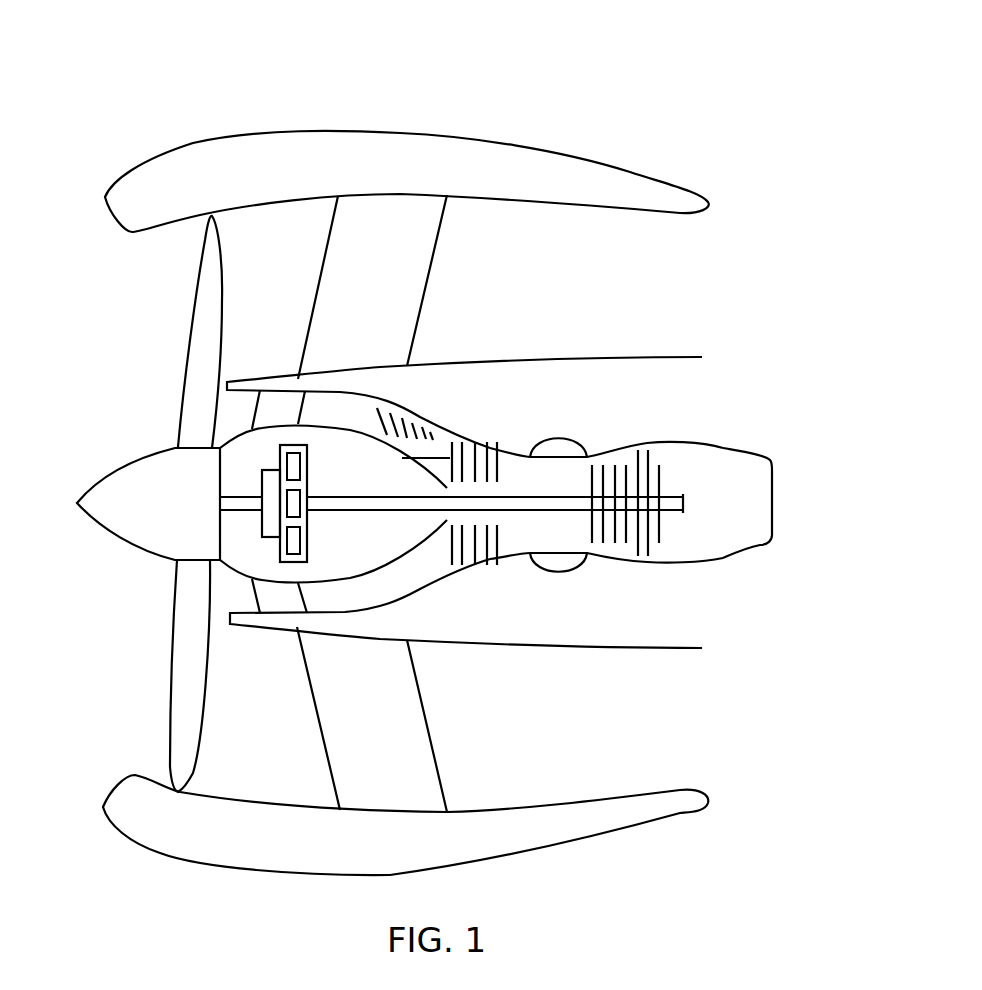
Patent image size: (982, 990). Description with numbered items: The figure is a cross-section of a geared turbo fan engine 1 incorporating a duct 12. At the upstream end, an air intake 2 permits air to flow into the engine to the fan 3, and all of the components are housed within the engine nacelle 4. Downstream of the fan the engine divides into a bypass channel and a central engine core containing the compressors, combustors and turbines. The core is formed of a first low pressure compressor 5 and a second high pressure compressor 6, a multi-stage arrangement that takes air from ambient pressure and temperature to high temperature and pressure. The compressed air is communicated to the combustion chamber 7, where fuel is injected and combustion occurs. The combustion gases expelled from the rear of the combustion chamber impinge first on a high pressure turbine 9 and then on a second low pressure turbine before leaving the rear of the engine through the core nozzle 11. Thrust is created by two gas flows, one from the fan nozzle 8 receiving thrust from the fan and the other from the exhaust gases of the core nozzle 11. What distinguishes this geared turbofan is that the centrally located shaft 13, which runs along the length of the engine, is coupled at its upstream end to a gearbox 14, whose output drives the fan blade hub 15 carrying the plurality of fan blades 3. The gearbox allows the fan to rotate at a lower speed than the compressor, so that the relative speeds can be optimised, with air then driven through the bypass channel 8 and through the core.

The geared turbo fan engine 1 is at (366, 106).
The air intake 2 is at (74, 247).
The fan 3 is at (222, 248).
The engine nacelle 4 is at (497, 143).
The low pressure compressor 5 is at (420, 417).
The high pressure compressor 6 is at (490, 443).
The combustion chamber 7 is at (564, 440).
The fan nozzle 8 is at (678, 714).
The high pressure turbine 9 is at (660, 470).
The core nozzle 11 is at (762, 495).
The air intake duct 12 is at (285, 403).
The shaft 13 is at (683, 494).
The gearbox 14 is at (280, 543).
The fan blade hub 15 is at (113, 468).